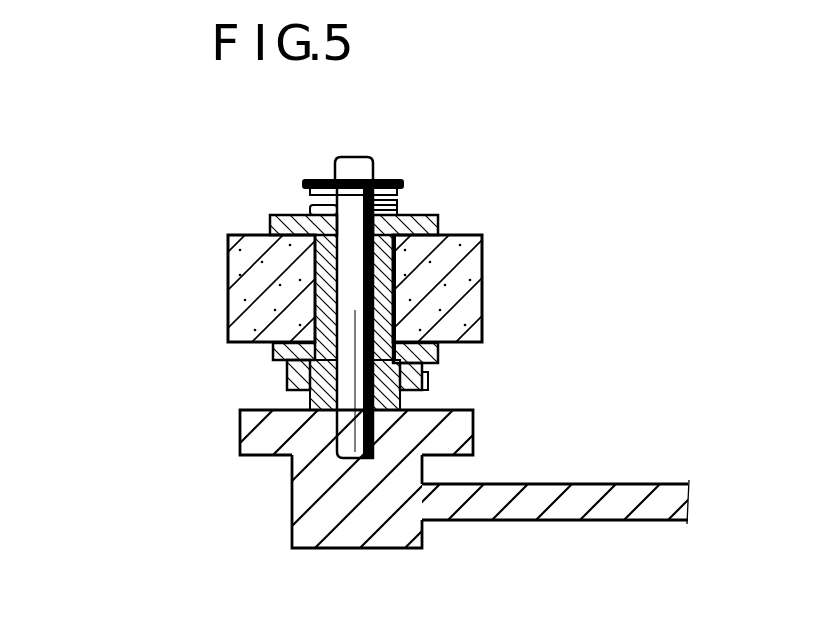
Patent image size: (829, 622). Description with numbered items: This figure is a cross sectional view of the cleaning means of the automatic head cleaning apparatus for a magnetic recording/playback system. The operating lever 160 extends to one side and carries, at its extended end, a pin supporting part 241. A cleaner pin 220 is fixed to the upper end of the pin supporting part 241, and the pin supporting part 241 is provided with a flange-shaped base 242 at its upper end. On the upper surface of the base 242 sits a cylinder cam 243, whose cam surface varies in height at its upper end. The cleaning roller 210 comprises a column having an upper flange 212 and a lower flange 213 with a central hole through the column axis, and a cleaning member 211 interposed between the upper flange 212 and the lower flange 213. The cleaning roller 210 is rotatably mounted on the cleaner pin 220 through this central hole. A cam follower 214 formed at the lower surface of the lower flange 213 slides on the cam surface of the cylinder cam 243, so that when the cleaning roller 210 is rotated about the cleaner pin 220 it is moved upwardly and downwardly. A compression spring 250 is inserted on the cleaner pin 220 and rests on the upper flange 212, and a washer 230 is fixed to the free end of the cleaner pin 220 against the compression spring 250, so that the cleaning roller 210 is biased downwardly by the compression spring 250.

The operating lever 160 is at (565, 507).
The cleaning roller 210 is at (226, 280).
The cleaning member 211 is at (462, 290).
The upper flange 212 is at (275, 217).
The lower flange 213 is at (273, 349).
The lower portion 214 is at (300, 378).
The cleaner pin 220 is at (352, 170).
The washer 230 is at (398, 180).
The pin supporting part 241 is at (292, 497).
The base 242 is at (257, 428).
The cylinder cam 243 is at (413, 390).
The compression spring 250 is at (303, 186).